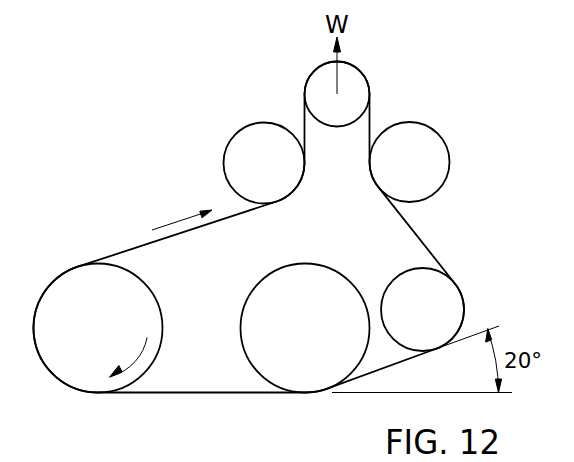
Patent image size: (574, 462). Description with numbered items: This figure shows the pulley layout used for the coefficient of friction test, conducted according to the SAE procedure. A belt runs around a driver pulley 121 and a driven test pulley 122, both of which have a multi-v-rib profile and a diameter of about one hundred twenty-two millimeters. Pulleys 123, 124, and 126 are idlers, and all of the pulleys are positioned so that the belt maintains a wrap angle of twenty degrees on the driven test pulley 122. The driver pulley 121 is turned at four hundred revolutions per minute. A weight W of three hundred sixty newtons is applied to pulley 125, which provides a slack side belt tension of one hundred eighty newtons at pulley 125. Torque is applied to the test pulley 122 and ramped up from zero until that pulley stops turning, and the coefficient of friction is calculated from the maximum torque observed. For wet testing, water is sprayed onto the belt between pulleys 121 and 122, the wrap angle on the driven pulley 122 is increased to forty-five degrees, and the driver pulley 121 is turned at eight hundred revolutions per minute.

The driver pulley 121 is at (47, 367).
The driven test pulley 122 is at (314, 393).
The idler pulley 123 is at (464, 304).
The idler pulley 124 is at (421, 119).
The tensioning pulley 125 is at (356, 64).
The idler pulley 126 is at (256, 123).